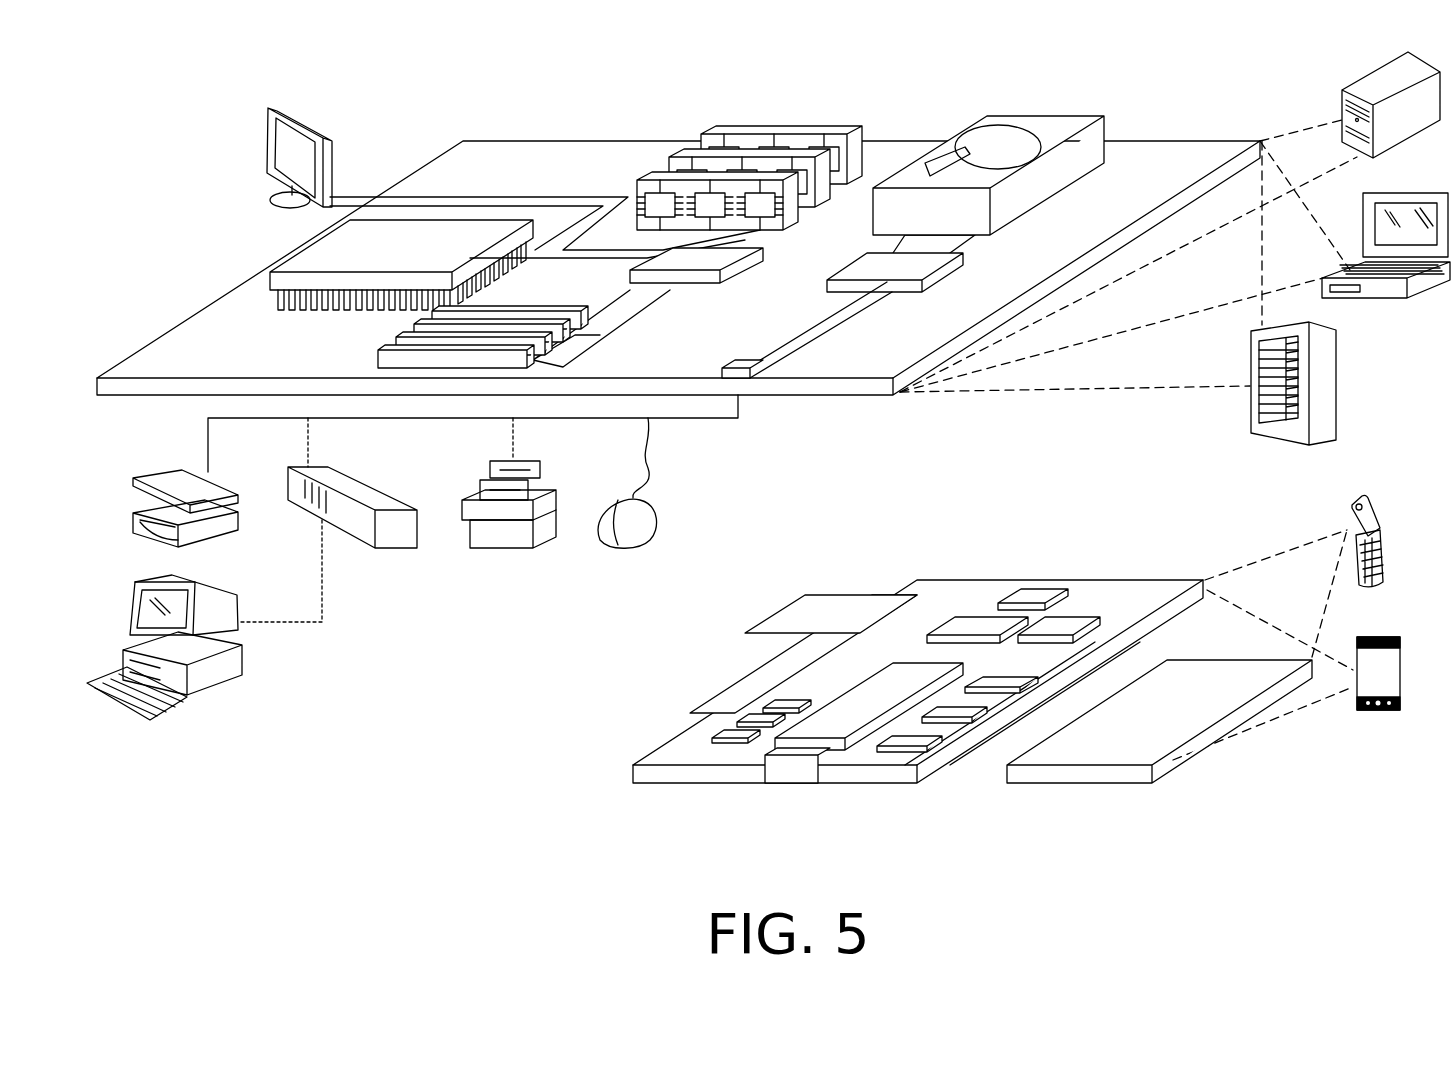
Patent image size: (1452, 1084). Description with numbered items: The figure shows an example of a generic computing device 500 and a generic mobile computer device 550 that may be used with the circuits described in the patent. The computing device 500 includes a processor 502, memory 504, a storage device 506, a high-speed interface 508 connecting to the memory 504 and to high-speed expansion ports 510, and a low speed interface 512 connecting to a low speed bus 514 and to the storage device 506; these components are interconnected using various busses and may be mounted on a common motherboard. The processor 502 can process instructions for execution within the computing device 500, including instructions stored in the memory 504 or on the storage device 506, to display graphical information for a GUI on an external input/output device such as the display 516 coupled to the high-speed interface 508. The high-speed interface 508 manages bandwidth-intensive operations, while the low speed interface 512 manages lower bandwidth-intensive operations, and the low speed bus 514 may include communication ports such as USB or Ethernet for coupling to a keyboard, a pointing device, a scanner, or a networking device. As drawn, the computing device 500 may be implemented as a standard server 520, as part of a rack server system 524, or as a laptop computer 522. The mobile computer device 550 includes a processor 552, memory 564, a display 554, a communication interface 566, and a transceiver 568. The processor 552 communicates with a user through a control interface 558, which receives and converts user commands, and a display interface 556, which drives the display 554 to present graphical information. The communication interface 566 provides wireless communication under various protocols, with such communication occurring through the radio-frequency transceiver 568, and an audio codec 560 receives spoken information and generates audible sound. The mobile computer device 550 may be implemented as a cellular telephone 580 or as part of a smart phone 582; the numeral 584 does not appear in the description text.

The computing device 500 is at (405, 82).
The processor 502 is at (295, 253).
The memory 504 is at (782, 133).
The storage device 506 is at (1030, 112).
The high-speed interface 508 is at (712, 260).
The high-speed expansion ports 510 is at (404, 340).
The low speed interface 512 is at (862, 263).
The low speed bus 514 is at (742, 366).
The display 516 is at (274, 108).
The standard server 520 is at (1362, 83).
The laptop computer 522 is at (1425, 192).
The rack server system 524 is at (1338, 382).
The mobile computer device 550 is at (1245, 775).
The processor 552 is at (832, 716).
The display 554 is at (1208, 672).
The display interface 556 is at (920, 742).
The control interface 558 is at (965, 712).
The audio codec 560 is at (1000, 678).
The memory 564 is at (742, 726).
The communication interface 566 is at (980, 614).
The transceiver 568 is at (1076, 616).
The cellular telephone 580 is at (1031, 588).
The smart phone 582 is at (897, 593).
The antenna pad 584 is at (807, 594).